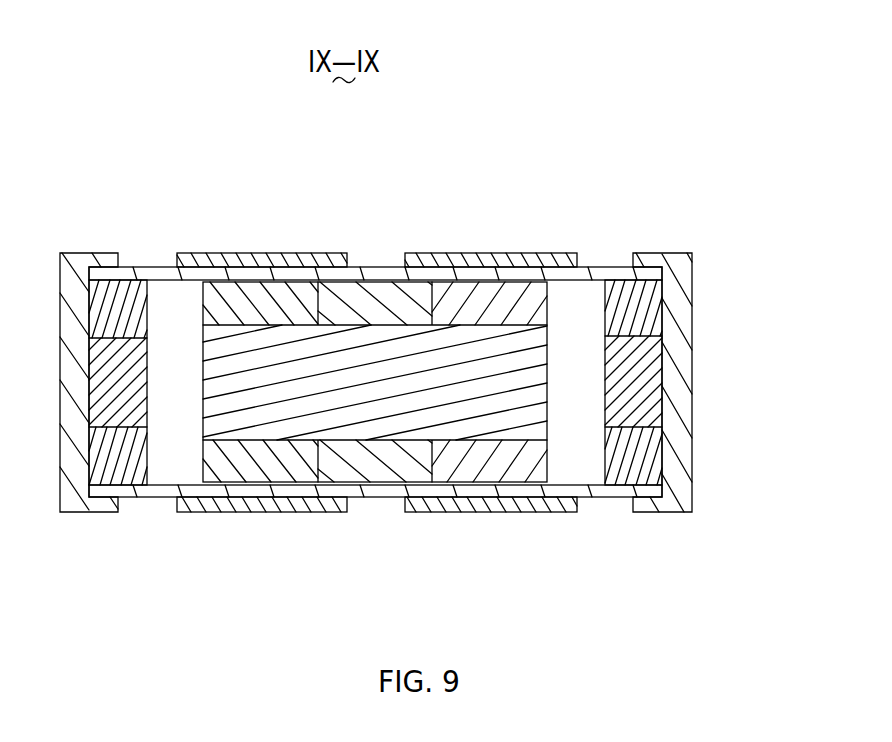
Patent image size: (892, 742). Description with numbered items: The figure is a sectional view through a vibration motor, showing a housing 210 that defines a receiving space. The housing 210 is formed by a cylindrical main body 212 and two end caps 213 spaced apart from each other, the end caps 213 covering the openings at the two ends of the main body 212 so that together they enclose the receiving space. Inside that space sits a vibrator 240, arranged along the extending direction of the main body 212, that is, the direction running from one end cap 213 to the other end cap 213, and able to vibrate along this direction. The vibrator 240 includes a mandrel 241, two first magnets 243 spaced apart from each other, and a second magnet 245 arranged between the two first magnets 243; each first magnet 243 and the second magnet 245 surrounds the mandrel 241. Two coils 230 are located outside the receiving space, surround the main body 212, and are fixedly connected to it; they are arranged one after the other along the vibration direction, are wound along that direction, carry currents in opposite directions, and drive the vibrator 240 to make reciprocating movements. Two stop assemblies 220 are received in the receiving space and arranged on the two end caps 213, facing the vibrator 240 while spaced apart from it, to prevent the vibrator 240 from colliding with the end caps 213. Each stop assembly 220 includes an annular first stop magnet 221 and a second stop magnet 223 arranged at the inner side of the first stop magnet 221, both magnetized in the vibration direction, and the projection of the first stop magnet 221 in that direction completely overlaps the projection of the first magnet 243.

The housing 210 is at (376, 435).
The main body 212 is at (680, 568).
The end cap 213 is at (673, 500).
The stop assembly 220 is at (451, 382).
The first stop magnet 221 is at (644, 319).
The second stop magnet 223 is at (642, 392).
The coil 230 is at (253, 260).
The vibrator 240 is at (375, 446).
The mandrel 241 is at (353, 413).
The first magnet 243 is at (489, 420).
The second magnet 245 is at (377, 472).